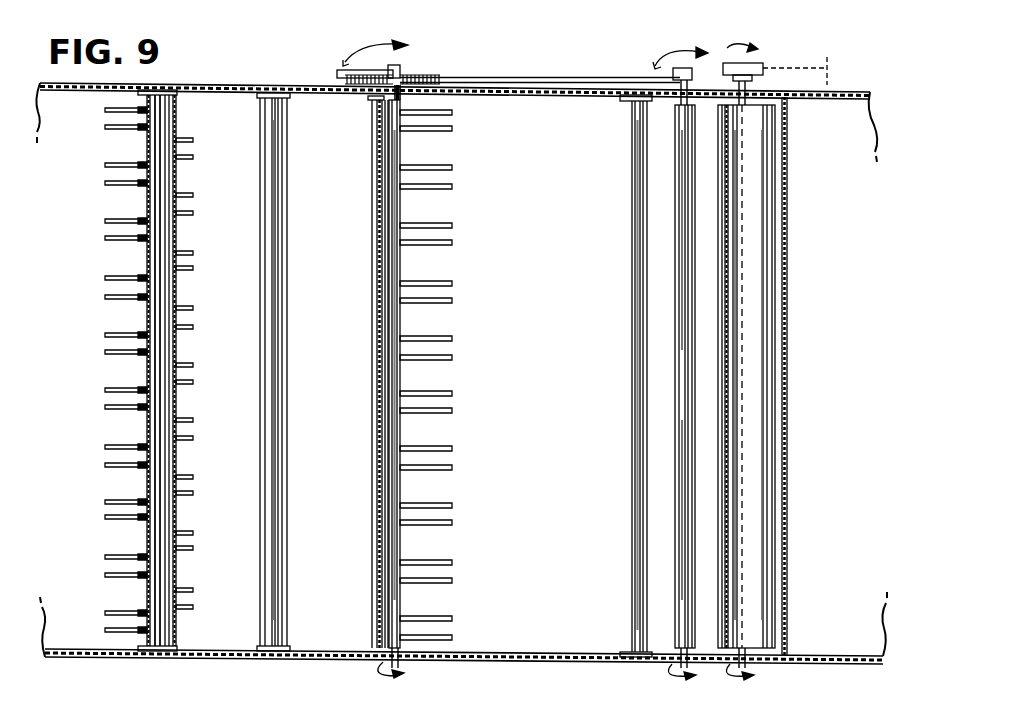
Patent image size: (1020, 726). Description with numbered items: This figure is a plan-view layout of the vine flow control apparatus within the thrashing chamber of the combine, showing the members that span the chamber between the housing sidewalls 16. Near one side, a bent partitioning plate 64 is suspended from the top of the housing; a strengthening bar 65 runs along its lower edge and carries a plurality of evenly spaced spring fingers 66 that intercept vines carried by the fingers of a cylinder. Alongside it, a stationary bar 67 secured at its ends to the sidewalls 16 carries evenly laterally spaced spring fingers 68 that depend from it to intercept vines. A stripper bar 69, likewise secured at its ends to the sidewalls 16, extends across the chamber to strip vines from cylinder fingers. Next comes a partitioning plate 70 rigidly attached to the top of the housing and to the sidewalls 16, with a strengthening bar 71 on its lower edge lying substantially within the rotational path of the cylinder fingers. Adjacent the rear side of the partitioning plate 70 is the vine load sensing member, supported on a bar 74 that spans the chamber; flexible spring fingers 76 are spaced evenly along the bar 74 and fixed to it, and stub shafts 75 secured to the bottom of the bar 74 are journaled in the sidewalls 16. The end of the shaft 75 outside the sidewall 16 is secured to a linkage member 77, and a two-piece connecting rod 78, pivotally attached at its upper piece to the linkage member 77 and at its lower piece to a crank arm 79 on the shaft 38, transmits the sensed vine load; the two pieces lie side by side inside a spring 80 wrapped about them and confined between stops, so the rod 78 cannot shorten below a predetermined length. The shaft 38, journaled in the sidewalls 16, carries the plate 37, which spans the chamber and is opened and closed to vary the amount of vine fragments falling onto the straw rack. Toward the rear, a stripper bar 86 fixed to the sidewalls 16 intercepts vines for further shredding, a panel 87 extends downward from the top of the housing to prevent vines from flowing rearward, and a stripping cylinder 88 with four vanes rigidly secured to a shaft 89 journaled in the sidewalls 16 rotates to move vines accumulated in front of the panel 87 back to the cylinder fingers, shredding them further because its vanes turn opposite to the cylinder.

The sidewall 16 is at (845, 92).
The plate 37 is at (687, 442).
The shaft 38 is at (695, 84).
The bent partitioning plate 64 is at (176, 240).
The strengthening bar 65 is at (167, 352).
The spring fingers 66 is at (180, 306).
The stationary bar 67 is at (146, 320).
The spring fingers 68 is at (120, 275).
The stripper bar 69 is at (268, 412).
The partitioning plate 70 is at (378, 321).
The strengthening bar 71 is at (373, 457).
The bar 74 is at (398, 380).
The stub shaft 75 is at (378, 90).
The flexible spring fingers 76 is at (437, 337).
The linkage member 77 is at (345, 73).
The connecting rod 78 is at (526, 78).
The crank arm 79 is at (668, 75).
The spring 80 is at (418, 76).
The stripper bar 86 is at (638, 367).
The panel 87 is at (788, 421).
The stripping cylinder 88 is at (753, 242).
The shaft 89 is at (750, 78).